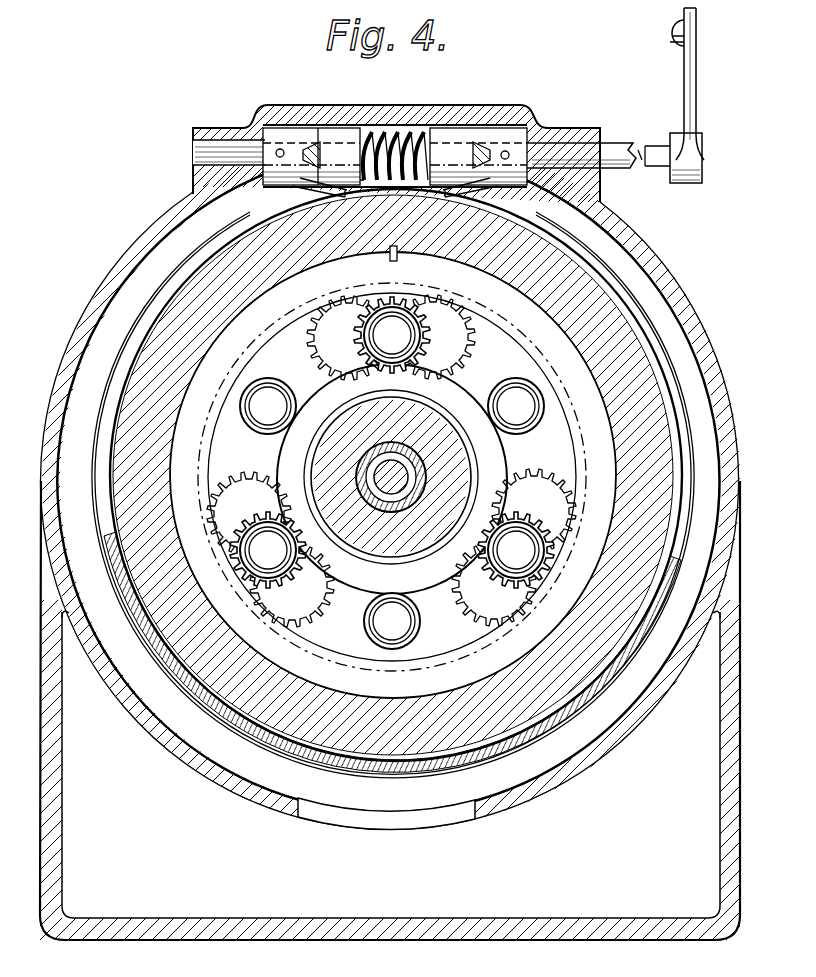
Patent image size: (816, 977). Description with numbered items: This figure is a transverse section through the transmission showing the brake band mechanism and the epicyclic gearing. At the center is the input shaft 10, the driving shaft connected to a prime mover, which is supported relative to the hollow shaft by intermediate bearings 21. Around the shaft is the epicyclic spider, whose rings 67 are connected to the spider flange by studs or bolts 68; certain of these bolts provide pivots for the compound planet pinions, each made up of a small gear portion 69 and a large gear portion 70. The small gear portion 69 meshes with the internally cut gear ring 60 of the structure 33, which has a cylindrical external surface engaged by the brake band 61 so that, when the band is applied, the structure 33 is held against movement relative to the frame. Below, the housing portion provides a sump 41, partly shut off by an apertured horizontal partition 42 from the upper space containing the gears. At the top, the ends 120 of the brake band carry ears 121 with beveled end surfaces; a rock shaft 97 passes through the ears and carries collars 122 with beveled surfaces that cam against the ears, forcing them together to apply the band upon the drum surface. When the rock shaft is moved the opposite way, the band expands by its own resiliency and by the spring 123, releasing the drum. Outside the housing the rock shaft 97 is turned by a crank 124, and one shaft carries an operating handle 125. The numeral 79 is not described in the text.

The input shaft 10 is at (400, 481).
The intermediate bearings 21 is at (405, 455).
The structure 33 is at (582, 290).
The sump 41 is at (390, 710).
The apertured horizontal partition 42 is at (228, 780).
The internally cut gear ring 60 is at (392, 464).
The brake band 61 is at (563, 720).
The rings 67 is at (392, 477).
The studs or bolts 68 is at (392, 478).
The small gear portion 69 is at (418, 308).
The large gear portion 70 is at (323, 347).
The bushing 79 is at (400, 503).
The rock shaft 97 is at (568, 155).
The ends of the brake bands 120 is at (292, 186).
The ears 121 is at (447, 150).
The collars 122 is at (282, 140).
The spring 123 is at (378, 136).
The crank 124 is at (690, 106).
The operating handle 125 is at (697, 16).